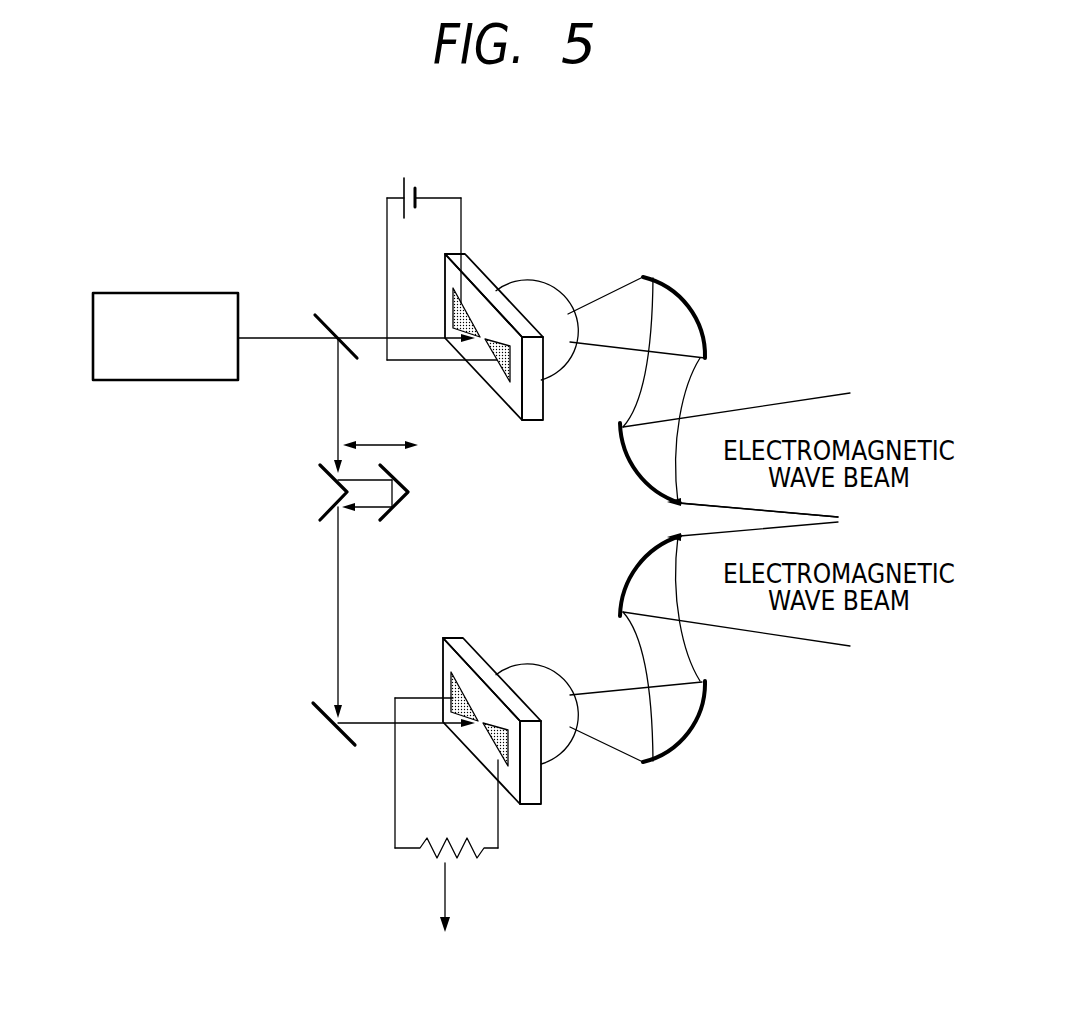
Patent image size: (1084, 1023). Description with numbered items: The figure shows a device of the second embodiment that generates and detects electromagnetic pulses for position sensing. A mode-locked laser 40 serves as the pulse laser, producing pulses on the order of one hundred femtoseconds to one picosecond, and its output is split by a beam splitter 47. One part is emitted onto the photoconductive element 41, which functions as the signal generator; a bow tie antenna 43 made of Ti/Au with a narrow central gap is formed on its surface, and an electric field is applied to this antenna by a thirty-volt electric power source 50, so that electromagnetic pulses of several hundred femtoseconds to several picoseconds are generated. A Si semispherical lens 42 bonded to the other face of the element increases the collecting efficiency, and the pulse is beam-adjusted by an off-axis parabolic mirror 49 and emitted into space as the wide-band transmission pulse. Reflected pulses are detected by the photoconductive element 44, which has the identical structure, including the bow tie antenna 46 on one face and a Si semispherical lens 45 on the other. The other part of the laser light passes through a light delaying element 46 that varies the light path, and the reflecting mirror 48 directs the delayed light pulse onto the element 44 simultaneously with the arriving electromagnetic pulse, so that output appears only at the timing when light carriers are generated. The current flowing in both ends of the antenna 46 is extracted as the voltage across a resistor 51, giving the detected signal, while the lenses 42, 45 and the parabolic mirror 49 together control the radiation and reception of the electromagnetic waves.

The mode-locked laser 40 is at (220, 292).
The photoconductive element 41 is at (480, 277).
The Si semispherical lens 42 is at (540, 303).
The bow tie antenna 43 is at (498, 368).
The photoconductive element 44 is at (467, 648).
The Si semispherical lens 45 is at (537, 678).
The bow tie antenna / light delaying element 46 is at (365, 518).
The beam splitter 47 is at (322, 317).
The reflecting mirror 48 is at (333, 733).
The off-axis parabolic mirror 49 is at (688, 310).
The electric power source 50 is at (412, 175).
The resistor 51 is at (465, 863).